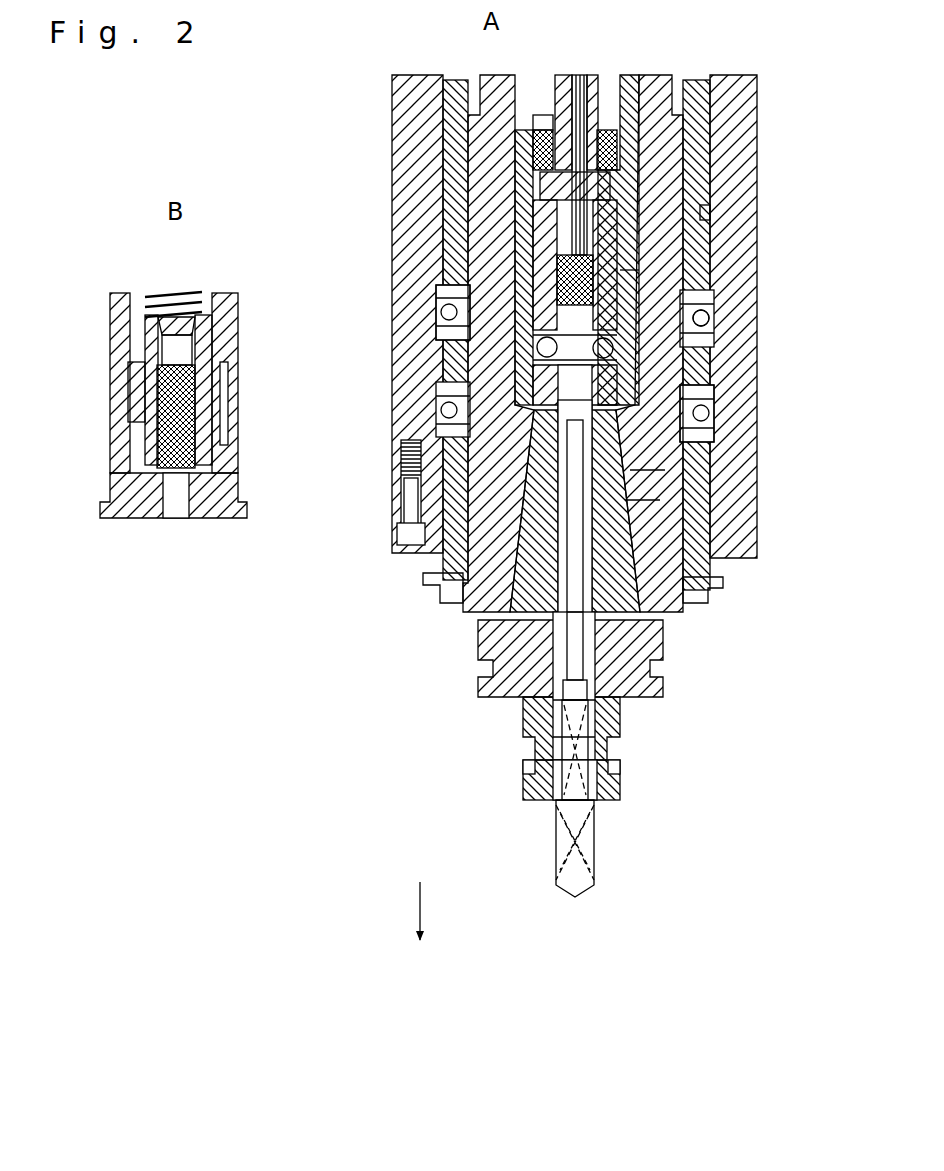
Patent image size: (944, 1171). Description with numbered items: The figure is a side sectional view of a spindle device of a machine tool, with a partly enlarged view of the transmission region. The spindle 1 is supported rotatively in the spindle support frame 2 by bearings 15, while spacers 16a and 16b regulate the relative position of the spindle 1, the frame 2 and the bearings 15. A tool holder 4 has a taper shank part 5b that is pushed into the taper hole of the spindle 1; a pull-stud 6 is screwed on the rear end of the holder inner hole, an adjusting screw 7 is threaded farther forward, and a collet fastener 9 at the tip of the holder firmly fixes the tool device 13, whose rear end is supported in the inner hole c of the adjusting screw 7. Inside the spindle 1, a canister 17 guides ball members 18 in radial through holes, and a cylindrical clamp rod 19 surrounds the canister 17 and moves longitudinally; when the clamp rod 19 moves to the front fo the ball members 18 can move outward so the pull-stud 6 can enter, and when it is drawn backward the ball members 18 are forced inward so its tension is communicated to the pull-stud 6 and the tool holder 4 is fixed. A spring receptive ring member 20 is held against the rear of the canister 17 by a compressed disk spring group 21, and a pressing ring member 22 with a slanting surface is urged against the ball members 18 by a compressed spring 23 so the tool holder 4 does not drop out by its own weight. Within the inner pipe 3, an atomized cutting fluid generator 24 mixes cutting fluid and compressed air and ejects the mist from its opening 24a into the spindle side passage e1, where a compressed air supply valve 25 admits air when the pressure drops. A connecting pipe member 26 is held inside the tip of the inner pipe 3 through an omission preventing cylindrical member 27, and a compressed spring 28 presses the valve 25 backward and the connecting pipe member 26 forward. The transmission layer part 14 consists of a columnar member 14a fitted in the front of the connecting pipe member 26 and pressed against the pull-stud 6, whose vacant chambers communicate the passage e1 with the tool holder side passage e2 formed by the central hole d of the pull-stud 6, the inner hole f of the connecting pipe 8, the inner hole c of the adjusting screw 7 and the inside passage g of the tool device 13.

The spindle 1 is at (398, 512).
The spindle support frame 2 is at (395, 412).
The inner pipe 3 is at (584, 78).
The tool holder 4 is at (452, 687).
The shank part 5b is at (455, 590).
The pull-stud 6 is at (665, 447).
The adjusting screw 7 is at (600, 684).
The connecting pipe 8 is at (690, 603).
The collet fastener 9 is at (628, 790).
The tool device 13 is at (562, 880).
The transmission layer part 14 is at (535, 332).
The columnar member 14a is at (185, 393).
The bearings 15 is at (718, 310).
The spacers 16a is at (735, 186).
The bearing outer ring 16b is at (462, 368).
The canister 17 is at (440, 392).
The ball member 18 is at (640, 388).
The clamp rod 19 is at (632, 78).
The spring receptive ring member 20 is at (522, 183).
The compressed disk spring group 21 is at (680, 103).
The pressing ring member 22 is at (522, 342).
The compressed spring 23 is at (540, 272).
The atomized cutting fluid generator 24 is at (528, 122).
The opening 24a is at (520, 207).
The compressed air supply valve 25 is at (540, 208).
The connecting pipe member 26 is at (548, 250).
The omission preventing cylindrical member 27 is at (712, 340).
The compressed spring 28 is at (705, 212).
The inner hole of adjusting screw c is at (540, 690).
The central hole of pull-stud d is at (665, 480).
The spindle side atomized cutting fluid passage e1 is at (635, 280).
The tool holder side atomized cutting fluid passage e2 is at (655, 505).
The inner hole of connecting pipe f is at (605, 660).
The front fo is at (414, 930).
The tool device inside passage g is at (590, 857).